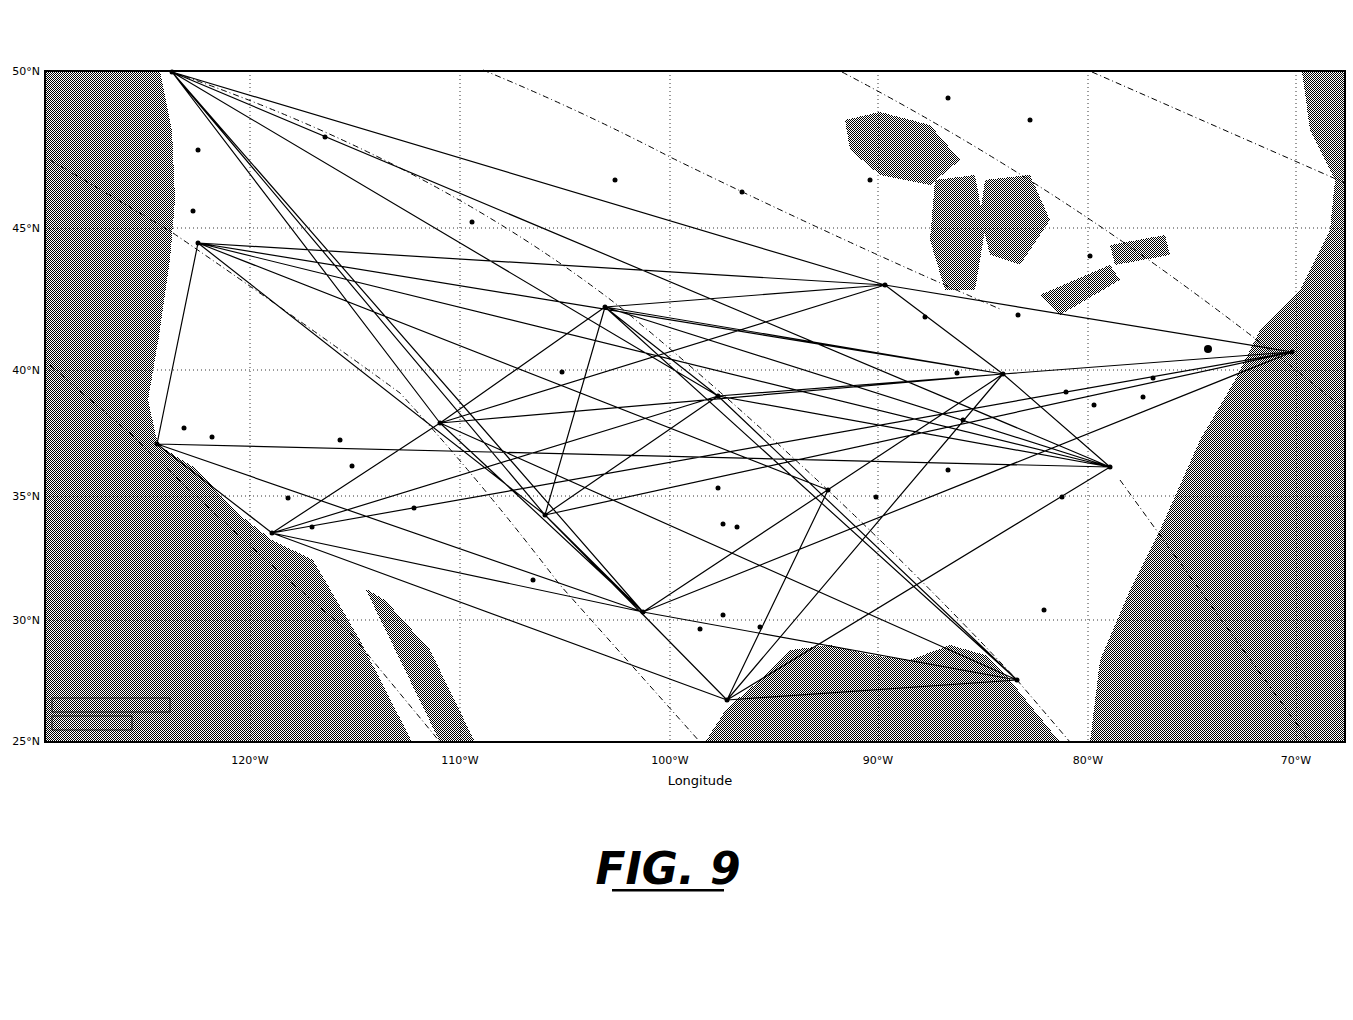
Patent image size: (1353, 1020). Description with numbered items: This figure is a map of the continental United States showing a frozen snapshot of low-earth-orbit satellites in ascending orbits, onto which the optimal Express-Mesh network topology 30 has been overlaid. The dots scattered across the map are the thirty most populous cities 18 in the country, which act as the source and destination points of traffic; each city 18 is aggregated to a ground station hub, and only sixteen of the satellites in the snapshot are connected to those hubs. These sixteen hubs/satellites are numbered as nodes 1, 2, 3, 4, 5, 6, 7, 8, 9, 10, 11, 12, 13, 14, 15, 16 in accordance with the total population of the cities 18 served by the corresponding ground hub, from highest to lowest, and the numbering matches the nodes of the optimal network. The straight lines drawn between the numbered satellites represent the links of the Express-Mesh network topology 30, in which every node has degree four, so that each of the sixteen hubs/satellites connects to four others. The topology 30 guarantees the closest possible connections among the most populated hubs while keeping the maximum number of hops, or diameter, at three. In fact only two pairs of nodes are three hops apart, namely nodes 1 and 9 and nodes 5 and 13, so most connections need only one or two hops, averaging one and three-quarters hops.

The hub/satellite node 1 is at (607, 308).
The hub/satellite node 2 is at (1119, 470).
The hub/satellite node 3 is at (1011, 378).
The hub/satellite node 4 is at (1292, 353).
The hub/satellite node 5 is at (645, 613).
The hub/satellite node 6 is at (551, 516).
The hub/satellite node 7 is at (726, 398).
The hub/satellite node 8 is at (446, 424).
The hub/satellite node 9 is at (264, 541).
The hub/satellite node 10 is at (172, 446).
The hub/satellite node 11 is at (212, 244).
The hub/satellite node 12 is at (900, 287).
The hub/satellite node 13 is at (186, 73).
The hub/satellite node 14 is at (743, 709).
The hub/satellite node 15 is at (844, 494).
The hub/satellite node 16 is at (1032, 684).
The city 18 is at (1205, 352).
The Express-Mesh network topology 30 is at (1178, 120).